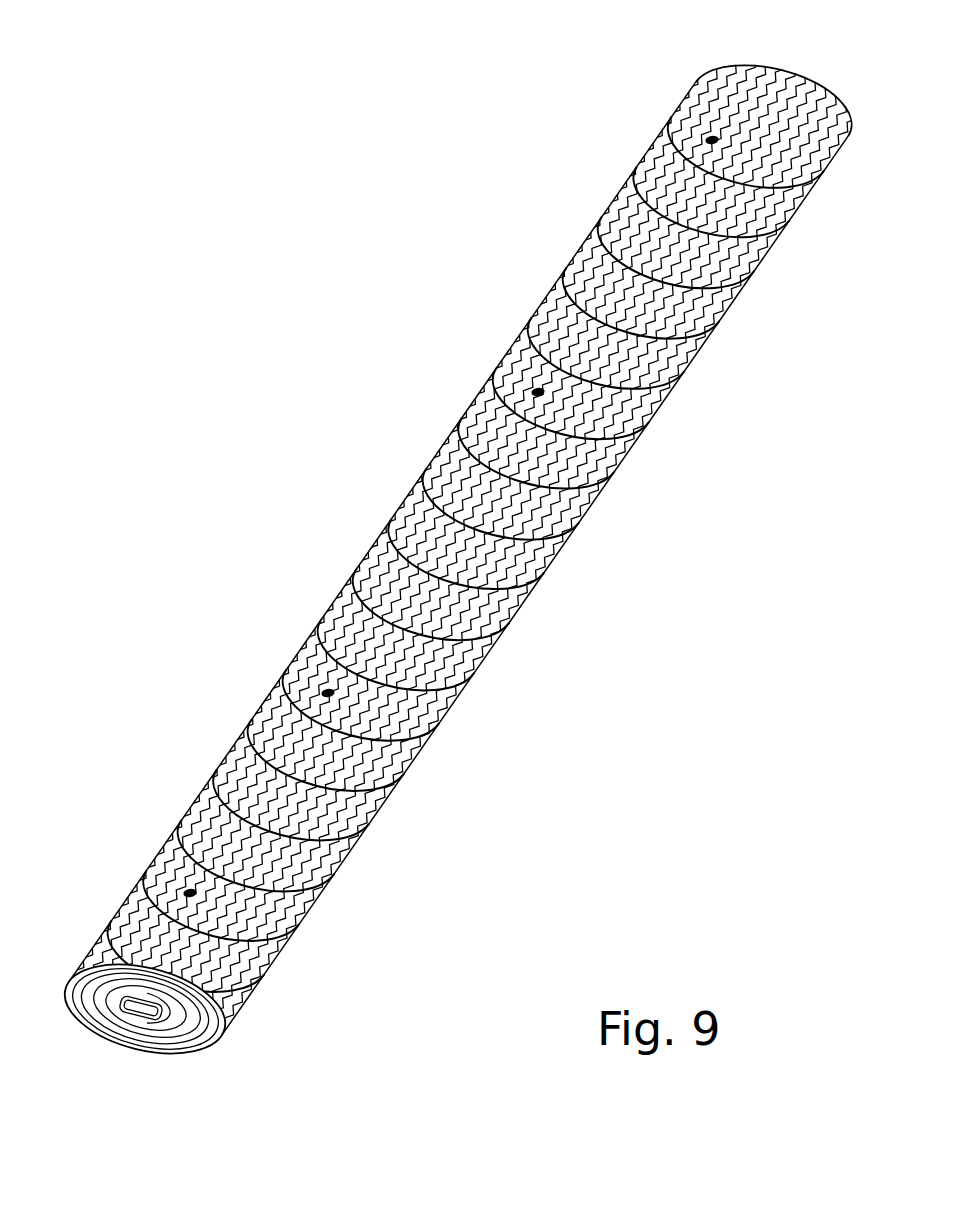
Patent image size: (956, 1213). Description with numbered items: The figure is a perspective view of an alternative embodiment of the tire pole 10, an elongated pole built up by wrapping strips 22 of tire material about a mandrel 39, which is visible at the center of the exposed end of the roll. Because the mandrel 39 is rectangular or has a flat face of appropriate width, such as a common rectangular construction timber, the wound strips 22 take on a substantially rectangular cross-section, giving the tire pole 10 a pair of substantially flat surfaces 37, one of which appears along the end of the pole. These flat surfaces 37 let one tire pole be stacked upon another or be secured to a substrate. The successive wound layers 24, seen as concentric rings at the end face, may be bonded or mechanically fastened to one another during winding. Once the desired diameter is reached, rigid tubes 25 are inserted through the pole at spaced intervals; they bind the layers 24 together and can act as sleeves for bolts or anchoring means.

The tire pole 10 is at (242, 259).
The strips 22 is at (592, 503).
The layers 24 is at (207, 1033).
The tubes 25 is at (708, 140).
The flat surface 37 is at (763, 65).
The mandrel 39 is at (143, 1010).